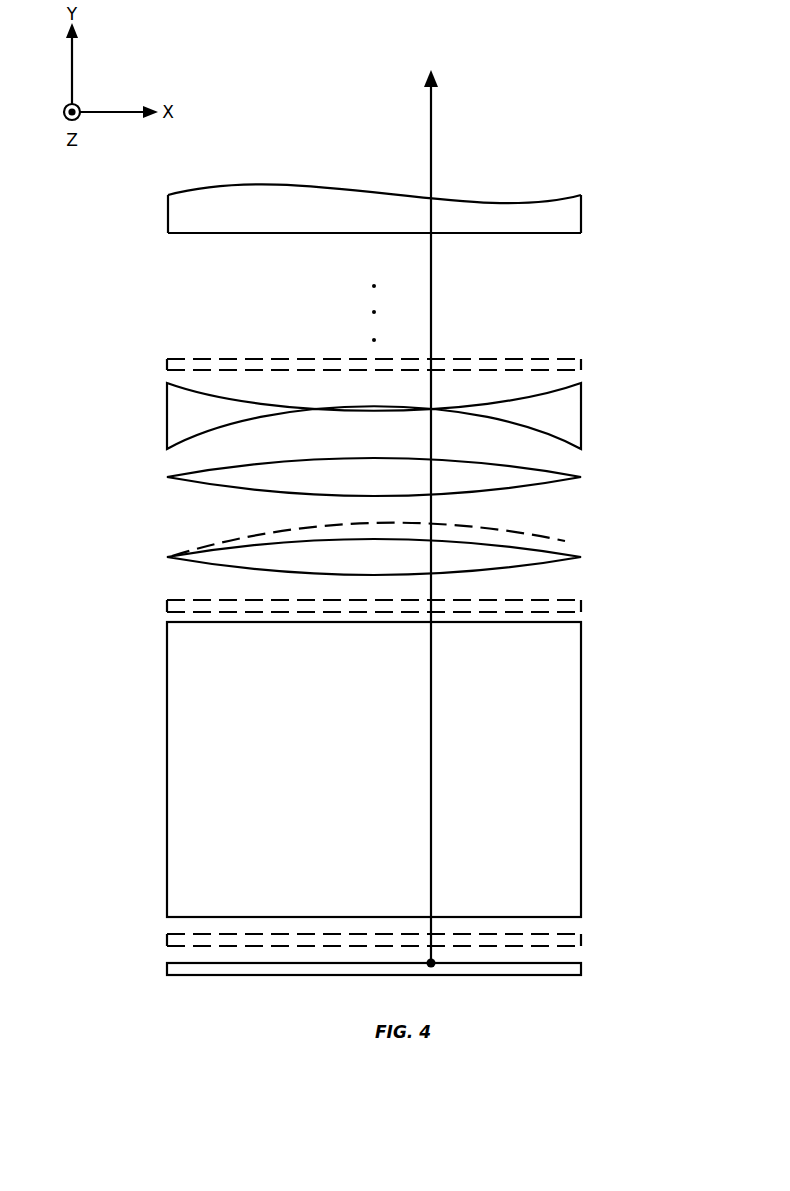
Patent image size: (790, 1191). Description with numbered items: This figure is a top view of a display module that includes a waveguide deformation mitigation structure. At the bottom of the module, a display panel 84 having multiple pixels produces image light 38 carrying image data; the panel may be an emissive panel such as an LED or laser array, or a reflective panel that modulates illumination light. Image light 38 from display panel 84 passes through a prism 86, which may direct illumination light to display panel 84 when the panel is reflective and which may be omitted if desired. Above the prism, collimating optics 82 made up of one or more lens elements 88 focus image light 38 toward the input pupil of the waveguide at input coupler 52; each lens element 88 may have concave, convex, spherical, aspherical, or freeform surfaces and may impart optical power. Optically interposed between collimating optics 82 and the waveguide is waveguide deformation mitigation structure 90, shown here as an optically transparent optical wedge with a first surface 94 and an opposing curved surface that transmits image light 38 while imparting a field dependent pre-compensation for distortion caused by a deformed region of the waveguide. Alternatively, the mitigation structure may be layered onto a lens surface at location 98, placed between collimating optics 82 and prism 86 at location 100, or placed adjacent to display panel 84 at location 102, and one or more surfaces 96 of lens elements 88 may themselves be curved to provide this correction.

The image light 38 is at (433, 735).
The input coupler 52 is at (508, 199).
The collimating optics 82 is at (379, 408).
The display panel 84 is at (583, 968).
The prism 86 is at (583, 772).
The lens elements 88 is at (328, 479).
The waveguide deformation mitigation structure 90 is at (342, 218).
The first surface 94 is at (304, 238).
The surfaces of lens elements 96 is at (208, 394).
The location 98 is at (376, 523).
The location 100 is at (584, 605).
The location 102 is at (583, 938).